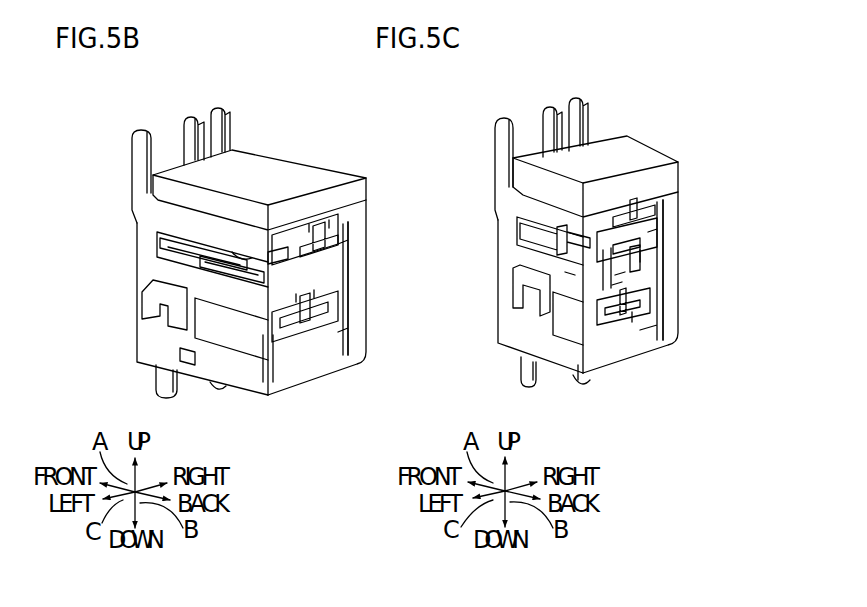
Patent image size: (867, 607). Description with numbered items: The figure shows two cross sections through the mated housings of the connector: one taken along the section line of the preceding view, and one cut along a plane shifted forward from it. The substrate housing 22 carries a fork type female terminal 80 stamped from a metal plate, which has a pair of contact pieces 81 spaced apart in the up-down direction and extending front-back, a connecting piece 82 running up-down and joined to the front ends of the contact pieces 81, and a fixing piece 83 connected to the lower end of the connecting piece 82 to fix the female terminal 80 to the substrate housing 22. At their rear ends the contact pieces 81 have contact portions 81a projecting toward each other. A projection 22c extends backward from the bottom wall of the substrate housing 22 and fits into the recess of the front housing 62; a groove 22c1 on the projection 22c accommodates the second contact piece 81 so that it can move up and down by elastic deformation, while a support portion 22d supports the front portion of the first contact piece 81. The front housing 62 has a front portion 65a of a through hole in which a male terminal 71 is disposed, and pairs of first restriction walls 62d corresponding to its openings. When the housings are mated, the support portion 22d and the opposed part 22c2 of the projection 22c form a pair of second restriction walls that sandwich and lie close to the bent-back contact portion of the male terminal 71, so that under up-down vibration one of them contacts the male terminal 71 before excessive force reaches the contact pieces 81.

In FIG. 5B, the substrate housing 22 is at (347, 168).
In FIG. 5C, the substrate housing 22 is at (665, 149).
In FIG. 5B, the projection 22c is at (269, 340).
In FIG. 5C, the projection 22c is at (642, 266).
In FIG. 5B, the groove 22c1 is at (242, 340).
In FIG. 5C, the groove 22c1 is at (617, 278).
In FIG. 5C, the opposed part 22c2 is at (650, 247).
In FIG. 5C, the support portion 22d is at (593, 232).
In FIG. 5B, the front housing 62 is at (350, 226).
In FIG. 5C, the front housing 62 is at (660, 200).
In FIG. 5B, the first restriction wall 62d is at (325, 248).
In FIG. 5B, the front portion of through hole 65a is at (185, 353).
In FIG. 5C, the front portion of through hole 65a is at (570, 277).
In FIG. 5B, the male terminal 71 is at (364, 288).
In FIG. 5C, the male terminal 71 is at (701, 292).
In FIG. 5B, the female terminal 80 is at (157, 198).
In FIG. 5C, the female terminal 80 is at (565, 232).
In FIG. 5B, the contact piece 81 is at (197, 272).
In FIG. 5C, the contact piece 81 is at (540, 257).
In FIG. 5B, the contact portion 81a is at (251, 250).
In FIG. 5B, the connecting piece 82 is at (140, 202).
In FIG. 5C, the connecting piece 82 is at (507, 193).
In FIG. 5B, the fixing piece 83 is at (136, 304).
In FIG. 5C, the fixing piece 83 is at (504, 290).